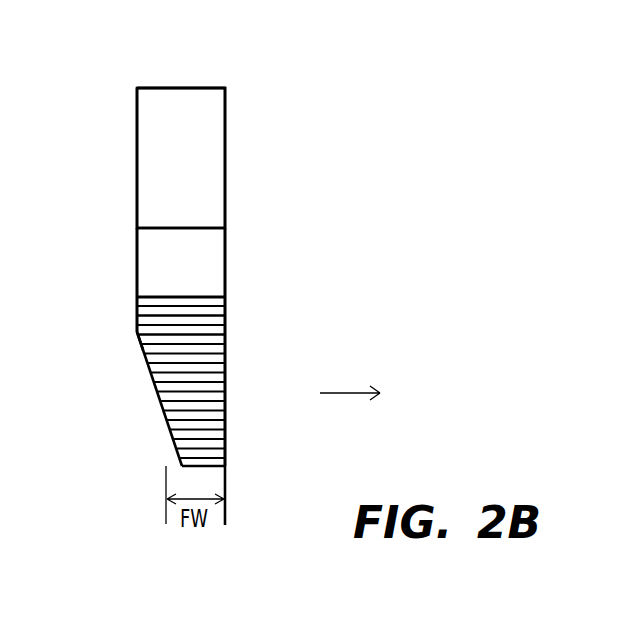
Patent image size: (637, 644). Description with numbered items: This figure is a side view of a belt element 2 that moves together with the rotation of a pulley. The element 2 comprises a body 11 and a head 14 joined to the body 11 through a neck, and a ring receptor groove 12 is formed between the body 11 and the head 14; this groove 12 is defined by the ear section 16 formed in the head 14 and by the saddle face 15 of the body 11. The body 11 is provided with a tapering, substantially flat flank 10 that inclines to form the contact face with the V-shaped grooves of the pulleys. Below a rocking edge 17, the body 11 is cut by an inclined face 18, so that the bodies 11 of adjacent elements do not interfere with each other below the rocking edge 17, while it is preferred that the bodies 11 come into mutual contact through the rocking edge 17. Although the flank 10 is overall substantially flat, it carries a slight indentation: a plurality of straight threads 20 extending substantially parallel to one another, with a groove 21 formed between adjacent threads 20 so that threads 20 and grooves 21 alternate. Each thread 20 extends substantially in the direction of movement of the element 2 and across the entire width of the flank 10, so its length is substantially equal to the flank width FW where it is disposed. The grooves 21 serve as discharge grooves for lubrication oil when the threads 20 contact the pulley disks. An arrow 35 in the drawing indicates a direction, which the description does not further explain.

The element 2 is at (226, 161).
The flank 10 is at (182, 384).
The body 11 is at (225, 388).
The ring receptor groove 12 is at (213, 260).
The head 14 is at (176, 88).
The saddle face 15 is at (157, 297).
The ear section 16 is at (155, 153).
The rocking edge 17 is at (137, 331).
The inclined face 18 is at (163, 435).
The thread 20 is at (213, 335).
The groove 21 is at (211, 364).
The movement direction 35 is at (344, 394).